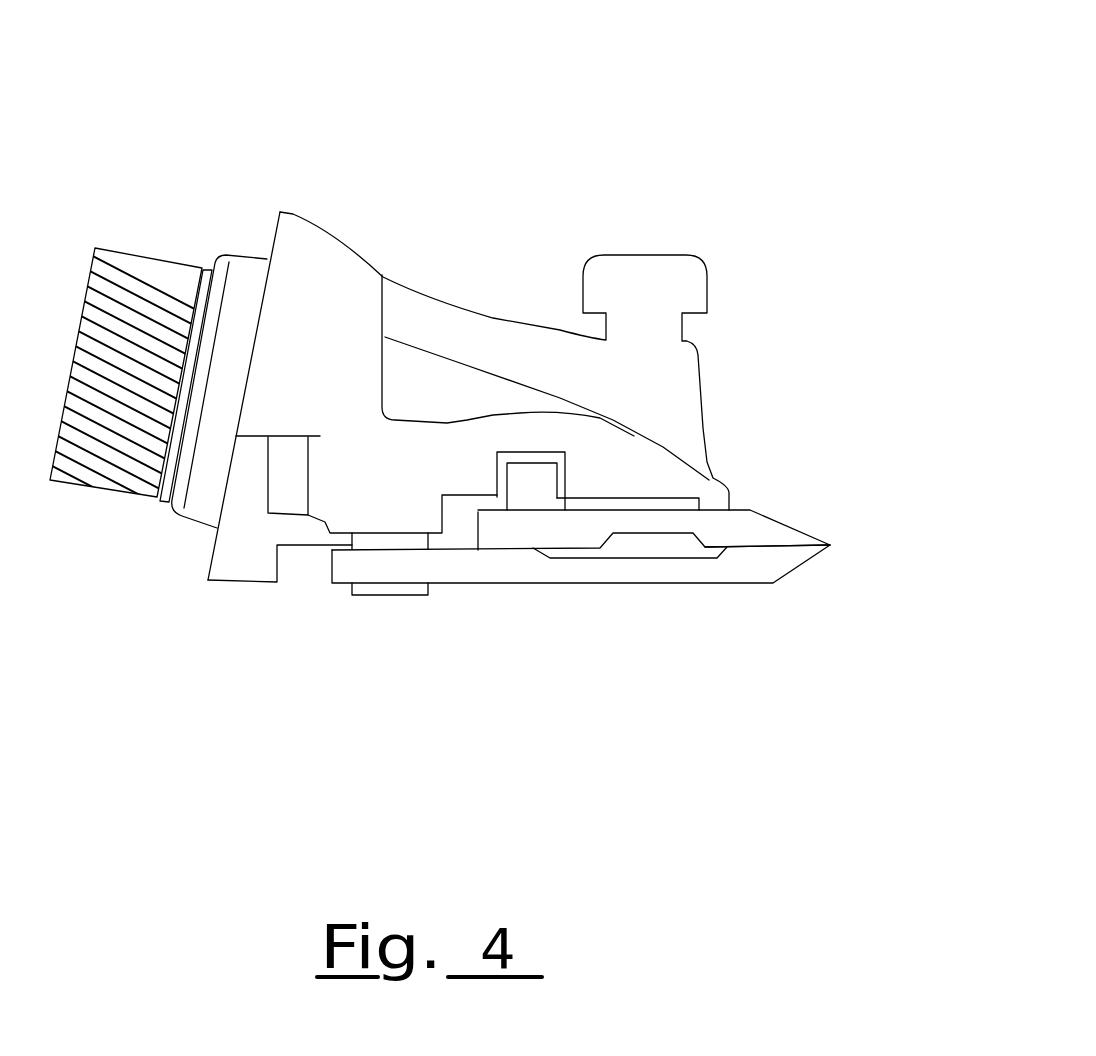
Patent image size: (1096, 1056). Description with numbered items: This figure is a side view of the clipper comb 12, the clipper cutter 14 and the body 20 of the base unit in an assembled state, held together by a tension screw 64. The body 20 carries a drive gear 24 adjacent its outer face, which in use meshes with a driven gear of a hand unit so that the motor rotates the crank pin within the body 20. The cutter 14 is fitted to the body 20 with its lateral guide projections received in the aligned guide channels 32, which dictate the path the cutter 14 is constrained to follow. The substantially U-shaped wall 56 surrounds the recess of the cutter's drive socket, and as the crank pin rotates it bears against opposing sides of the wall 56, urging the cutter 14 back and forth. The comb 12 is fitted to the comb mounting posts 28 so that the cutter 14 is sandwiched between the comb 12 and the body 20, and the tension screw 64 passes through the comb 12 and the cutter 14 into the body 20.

The clipper comb 12 is at (530, 568).
The clipper cutter 14 is at (747, 528).
The body 20 is at (312, 255).
The drive gear 24 is at (112, 468).
The comb mounting posts 28 is at (395, 592).
The clipper cutter guide channels 32 is at (530, 453).
The U-shaped wall 56 is at (530, 485).
The tension screw 64 is at (746, 140).